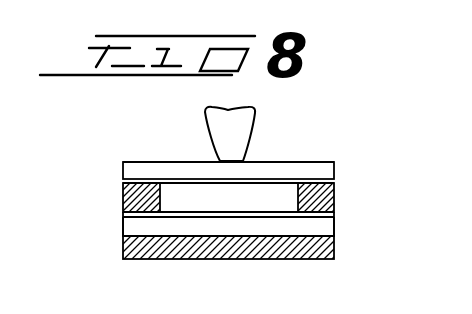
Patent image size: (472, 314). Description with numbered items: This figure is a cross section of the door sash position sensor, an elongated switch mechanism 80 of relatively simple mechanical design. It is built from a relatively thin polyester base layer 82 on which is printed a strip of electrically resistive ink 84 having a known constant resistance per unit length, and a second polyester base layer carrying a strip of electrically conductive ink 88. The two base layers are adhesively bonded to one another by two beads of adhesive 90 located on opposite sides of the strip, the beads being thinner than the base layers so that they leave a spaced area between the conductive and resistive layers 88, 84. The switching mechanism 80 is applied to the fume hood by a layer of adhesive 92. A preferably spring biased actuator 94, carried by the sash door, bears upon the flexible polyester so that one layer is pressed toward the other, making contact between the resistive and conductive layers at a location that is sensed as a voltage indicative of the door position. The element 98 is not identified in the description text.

The switch mechanism 80 is at (208, 157).
The polyester base layer 82 is at (303, 230).
The strip of electrically resistive ink 84 is at (335, 226).
The strip of electrically conductive ink 88 is at (170, 180).
The beads of adhesive 90 is at (327, 193).
The layer of adhesive 92 is at (232, 259).
The actuator 94 is at (245, 130).
The left side wall 98 is at (131, 197).